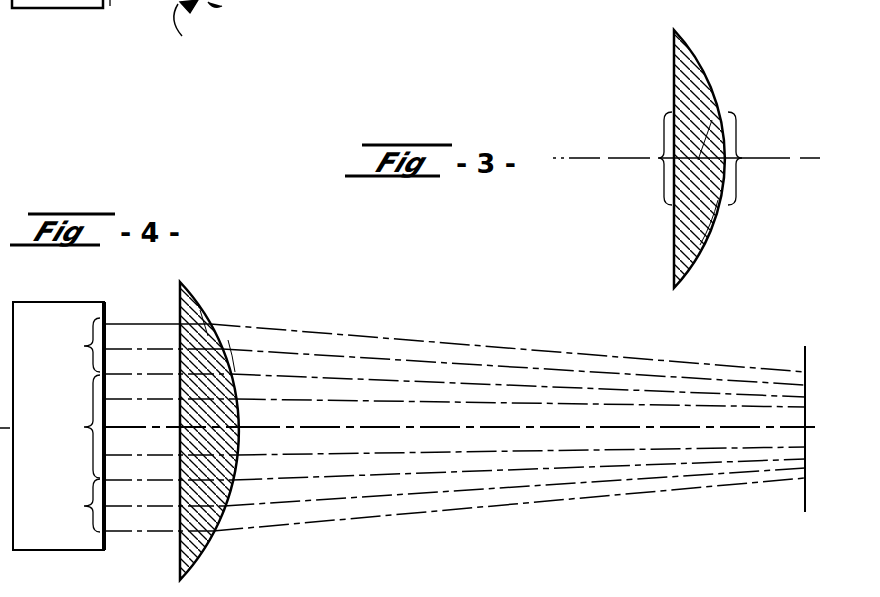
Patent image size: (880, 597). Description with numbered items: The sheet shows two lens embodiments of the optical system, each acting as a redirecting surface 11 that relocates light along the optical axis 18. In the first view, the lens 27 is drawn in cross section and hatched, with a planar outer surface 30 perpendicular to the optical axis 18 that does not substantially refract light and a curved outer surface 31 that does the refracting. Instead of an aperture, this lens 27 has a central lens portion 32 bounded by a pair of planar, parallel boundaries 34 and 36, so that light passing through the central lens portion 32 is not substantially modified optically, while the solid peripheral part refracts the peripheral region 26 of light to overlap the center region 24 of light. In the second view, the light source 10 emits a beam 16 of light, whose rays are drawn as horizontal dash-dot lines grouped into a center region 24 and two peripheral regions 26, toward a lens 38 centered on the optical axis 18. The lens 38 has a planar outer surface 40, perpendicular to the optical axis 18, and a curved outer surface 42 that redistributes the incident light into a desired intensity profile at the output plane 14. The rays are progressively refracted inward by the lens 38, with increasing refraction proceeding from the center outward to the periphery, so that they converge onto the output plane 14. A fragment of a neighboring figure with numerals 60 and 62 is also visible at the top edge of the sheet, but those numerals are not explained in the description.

In FIG. 4, the light source 10 is at (35, 300).
In FIG. 3, the redirecting surface 11 is at (720, 222).
In FIG. 4, the redirecting surface 11 is at (232, 360).
In FIG. 4, the output plane 14 is at (805, 360).
In FIG. 4, the beam of light 16 is at (122, 386).
In FIG. 3, the optical axis 18 is at (611, 157).
In FIG. 4, the optical axis 18 is at (580, 427).
In FIG. 4, the center region of light 24 is at (71, 426).
In FIG. 4, the peripheral region of light 26 is at (71, 425).
In FIG. 3, the lens 27 is at (710, 50).
In FIG. 4, the planar outer surface 30 is at (195, 27).
In FIG. 4, the curved outer surface 31 is at (218, 8).
In FIG. 3, the central lens portion 32 is at (700, 150).
In FIG. 3, the planar boundary 34 is at (646, 158).
In FIG. 3, the planar boundary 36 is at (756, 158).
In FIG. 4, the lens 38 is at (236, 309).
In FIG. 4, the planar outer surface 40 is at (180, 300).
In FIG. 4, the curved outer surface 42 is at (208, 338).
In FIG. 4, the element 60 is at (137, 13).
In FIG. 4, the element 62 is at (71, 21).